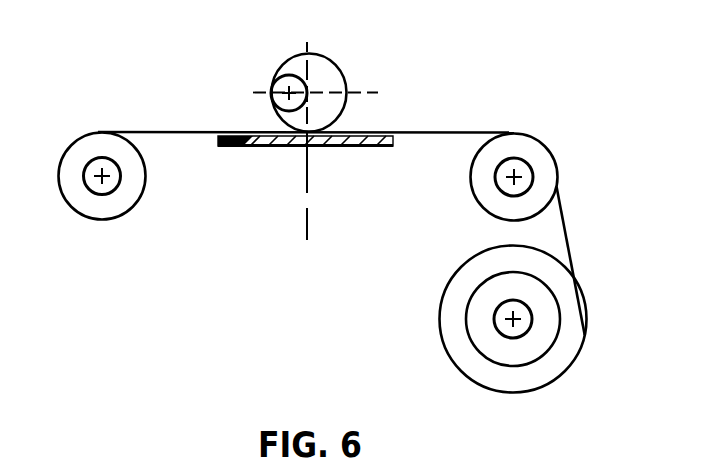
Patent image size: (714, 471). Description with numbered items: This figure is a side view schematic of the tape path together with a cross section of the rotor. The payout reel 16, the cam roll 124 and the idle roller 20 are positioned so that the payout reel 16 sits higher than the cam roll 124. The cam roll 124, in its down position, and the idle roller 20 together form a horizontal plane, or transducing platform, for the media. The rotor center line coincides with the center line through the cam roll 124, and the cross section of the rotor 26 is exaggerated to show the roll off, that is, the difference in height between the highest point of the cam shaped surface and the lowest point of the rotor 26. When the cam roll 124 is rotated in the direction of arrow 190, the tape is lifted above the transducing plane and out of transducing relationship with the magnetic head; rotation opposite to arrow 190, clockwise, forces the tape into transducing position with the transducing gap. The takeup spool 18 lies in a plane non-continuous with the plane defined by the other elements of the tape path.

The payout reel 16 is at (66, 217).
The takeup spool 18 is at (428, 320).
The idle roller 20 is at (549, 149).
The rotor 26 is at (364, 147).
The cam roll 124 is at (340, 70).
The arrow 190 is at (284, 128).